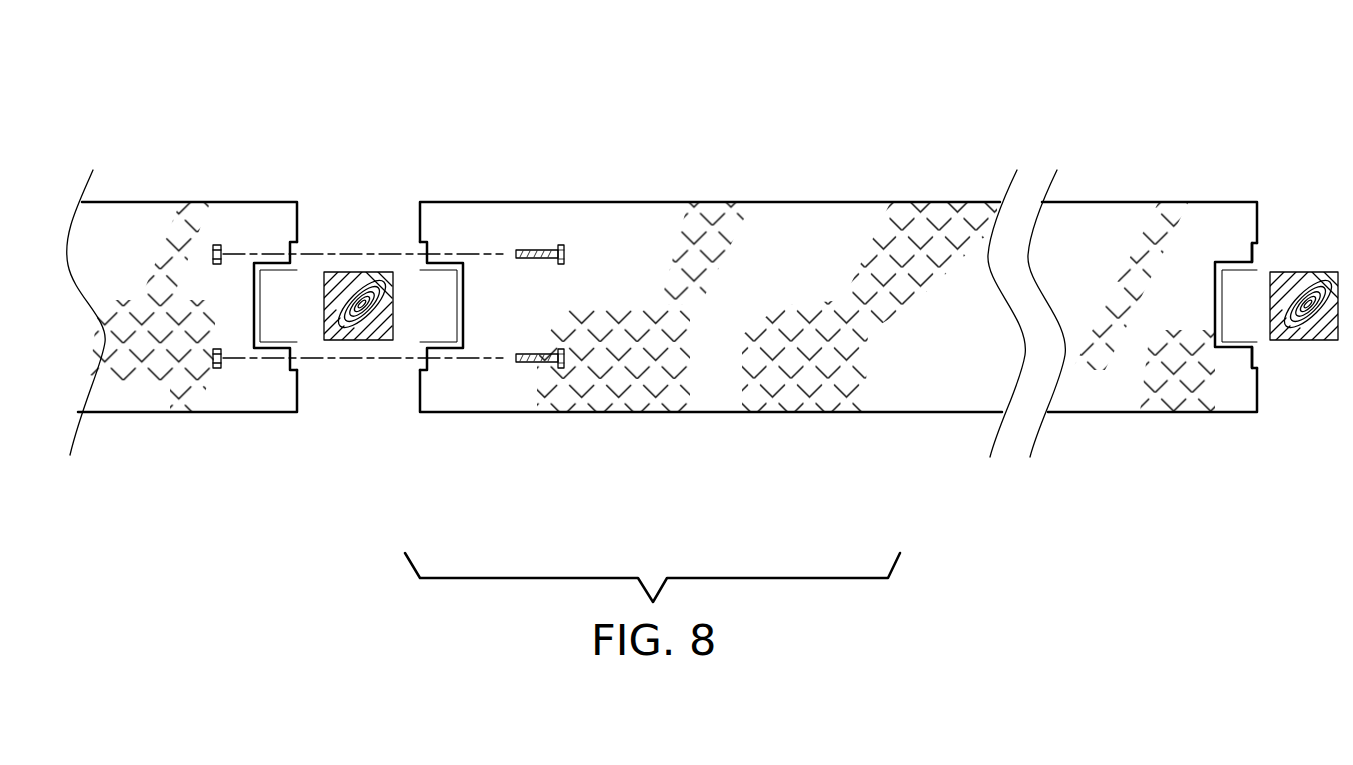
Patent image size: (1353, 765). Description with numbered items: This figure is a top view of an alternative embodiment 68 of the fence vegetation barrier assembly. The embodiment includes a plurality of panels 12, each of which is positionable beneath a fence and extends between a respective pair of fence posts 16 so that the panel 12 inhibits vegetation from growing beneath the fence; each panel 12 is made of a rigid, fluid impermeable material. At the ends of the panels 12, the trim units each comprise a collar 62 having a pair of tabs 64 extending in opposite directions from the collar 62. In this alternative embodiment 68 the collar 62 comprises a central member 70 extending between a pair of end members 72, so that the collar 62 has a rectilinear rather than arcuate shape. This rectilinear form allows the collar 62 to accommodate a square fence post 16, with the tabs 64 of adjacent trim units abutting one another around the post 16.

The panel 12 is at (188, 202).
The fence post 16 is at (358, 340).
The collar 62 is at (462, 263).
The tab 64 is at (1257, 353).
The alternative embodiment 68 is at (860, 130).
The central member 70 is at (1215, 268).
The end member 72 is at (1232, 260).